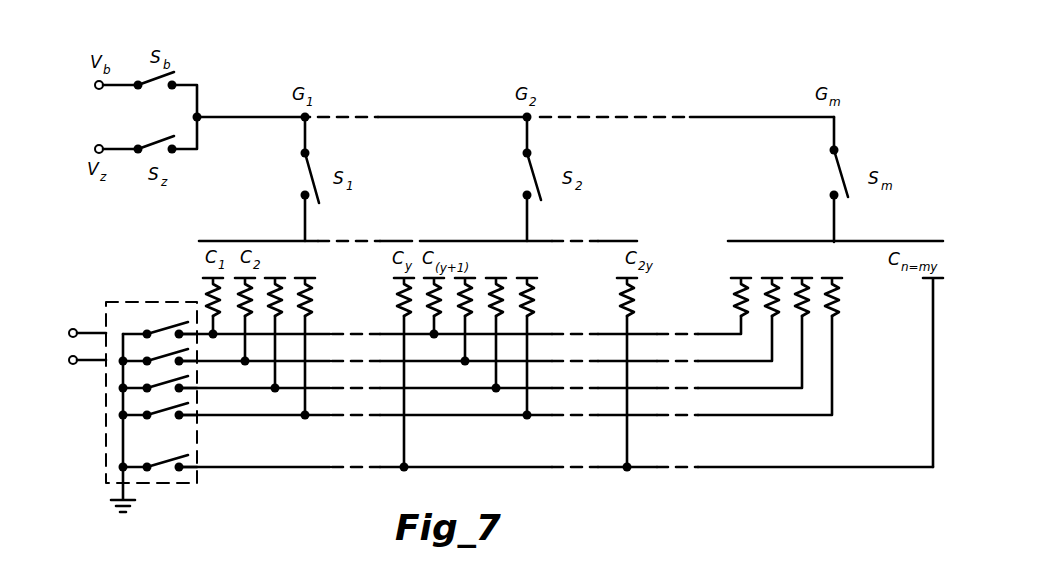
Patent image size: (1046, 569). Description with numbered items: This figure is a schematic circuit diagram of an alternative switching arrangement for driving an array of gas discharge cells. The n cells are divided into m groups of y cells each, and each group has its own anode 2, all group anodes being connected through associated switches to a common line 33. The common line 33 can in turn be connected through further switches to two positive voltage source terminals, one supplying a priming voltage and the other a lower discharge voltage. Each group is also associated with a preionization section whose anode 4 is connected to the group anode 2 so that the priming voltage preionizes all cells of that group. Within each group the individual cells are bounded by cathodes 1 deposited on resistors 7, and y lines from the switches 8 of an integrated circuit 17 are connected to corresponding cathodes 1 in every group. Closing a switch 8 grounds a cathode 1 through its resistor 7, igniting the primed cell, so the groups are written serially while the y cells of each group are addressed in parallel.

The common line 33 is at (236, 117).
The anode 2 is at (571, 222).
The anode 4 is at (305, 225).
The resistor 7 is at (550, 358).
The cathode 1 is at (202, 285).
The switch 8 is at (167, 352).
The integrated circuit 17 is at (119, 391).